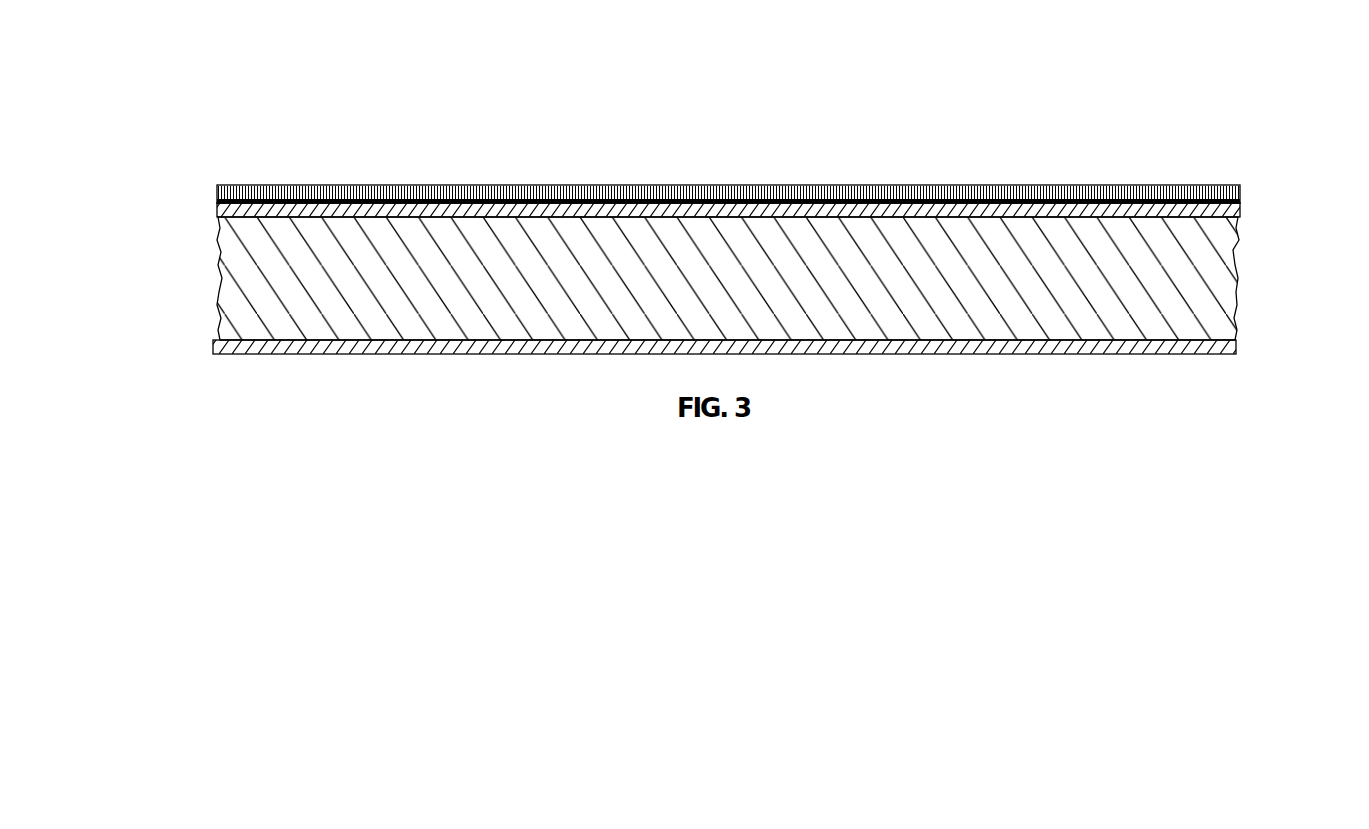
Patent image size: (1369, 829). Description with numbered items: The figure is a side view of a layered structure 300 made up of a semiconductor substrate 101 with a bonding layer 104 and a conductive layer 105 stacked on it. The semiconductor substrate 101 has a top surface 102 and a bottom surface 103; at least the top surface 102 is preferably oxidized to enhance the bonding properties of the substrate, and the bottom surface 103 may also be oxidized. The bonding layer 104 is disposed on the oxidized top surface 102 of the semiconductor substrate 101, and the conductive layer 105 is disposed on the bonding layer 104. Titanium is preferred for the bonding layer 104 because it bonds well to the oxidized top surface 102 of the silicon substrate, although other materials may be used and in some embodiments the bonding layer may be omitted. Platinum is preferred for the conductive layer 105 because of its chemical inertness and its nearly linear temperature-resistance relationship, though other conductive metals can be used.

The layered structure 300 is at (690, 150).
The semiconductor substrate 101 is at (1235, 277).
The top surface 102 is at (215, 345).
The bottom surface 103 is at (218, 208).
The bonding layer 104 is at (1242, 201).
The conductive layer 105 is at (1243, 195).